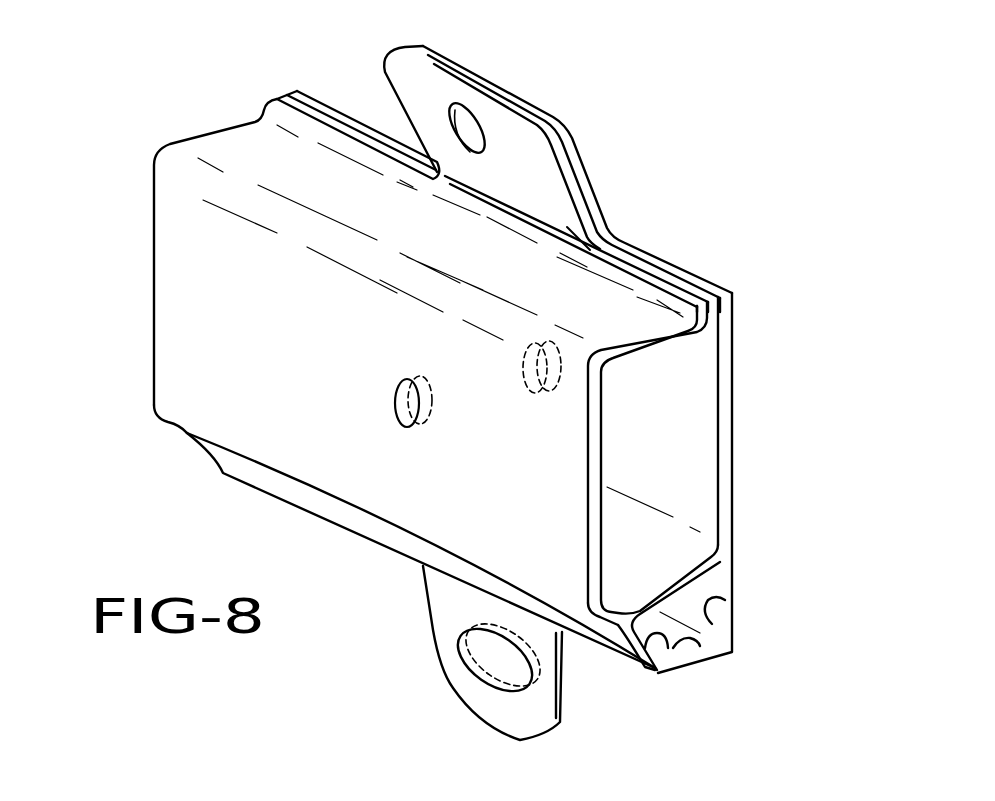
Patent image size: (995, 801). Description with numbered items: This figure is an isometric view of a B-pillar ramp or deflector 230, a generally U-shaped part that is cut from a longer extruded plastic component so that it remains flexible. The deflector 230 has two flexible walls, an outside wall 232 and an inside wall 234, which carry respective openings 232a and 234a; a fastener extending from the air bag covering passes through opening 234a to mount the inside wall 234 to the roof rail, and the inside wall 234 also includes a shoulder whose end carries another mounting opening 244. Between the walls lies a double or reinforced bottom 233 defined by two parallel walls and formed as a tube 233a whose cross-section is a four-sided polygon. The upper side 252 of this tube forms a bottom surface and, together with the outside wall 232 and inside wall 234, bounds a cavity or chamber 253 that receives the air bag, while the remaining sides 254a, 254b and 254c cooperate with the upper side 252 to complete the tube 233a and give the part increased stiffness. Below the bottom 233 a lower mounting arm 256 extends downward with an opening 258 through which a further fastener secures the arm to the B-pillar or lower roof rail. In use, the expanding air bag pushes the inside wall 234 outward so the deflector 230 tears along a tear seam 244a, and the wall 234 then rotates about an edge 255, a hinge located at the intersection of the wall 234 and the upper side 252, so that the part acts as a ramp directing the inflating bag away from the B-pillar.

The B-pillar ramp or deflector 230 is at (157, 112).
The mounting opening 244 is at (470, 120).
The tear seam 244a is at (480, 198).
The inside wall 234 is at (177, 253).
The opening 234a is at (400, 418).
The opening 232a is at (547, 352).
The outside wall 232 is at (735, 407).
The cavity or chamber 253 is at (678, 443).
The upper side 252 is at (680, 577).
The double or reinforced bottom 233 is at (690, 605).
The side of tube 254c is at (712, 624).
The tube 233a is at (675, 632).
The side of tube 254b is at (703, 645).
The side of tube 254a is at (660, 655).
The edge 255 is at (612, 622).
The lower mounting arm 256 is at (447, 610).
The opening 258 is at (487, 682).